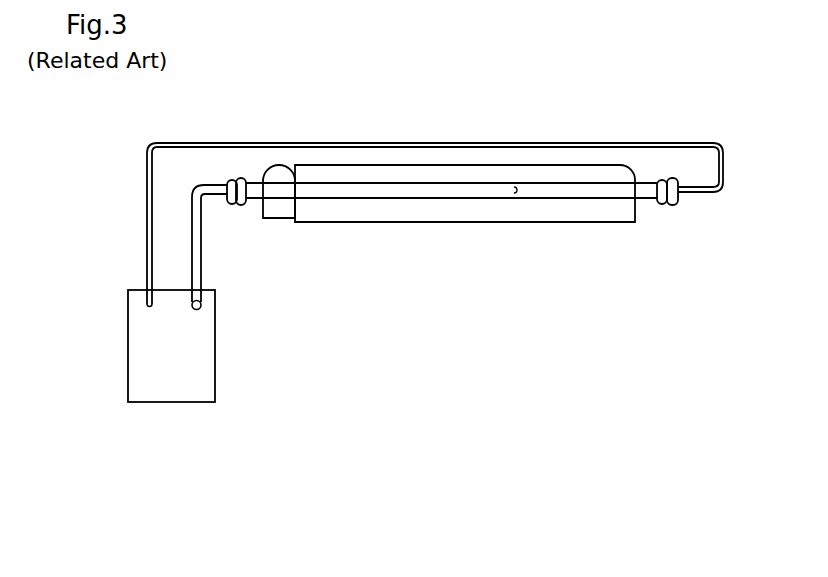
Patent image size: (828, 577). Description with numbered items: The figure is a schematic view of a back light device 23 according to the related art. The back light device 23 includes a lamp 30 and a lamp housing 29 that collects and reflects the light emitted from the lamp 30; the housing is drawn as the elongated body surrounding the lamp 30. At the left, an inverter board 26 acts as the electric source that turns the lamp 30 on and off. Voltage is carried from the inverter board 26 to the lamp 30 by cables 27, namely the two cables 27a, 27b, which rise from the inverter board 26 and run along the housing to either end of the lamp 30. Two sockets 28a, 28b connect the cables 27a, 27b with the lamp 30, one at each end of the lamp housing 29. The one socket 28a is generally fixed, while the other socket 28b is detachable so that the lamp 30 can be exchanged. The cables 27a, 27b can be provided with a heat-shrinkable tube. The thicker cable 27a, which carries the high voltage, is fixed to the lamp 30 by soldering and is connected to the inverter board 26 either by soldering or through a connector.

The back light device 23 is at (608, 103).
The inverter board 26 is at (168, 390).
The cables 27 is at (58, 205).
The cable for high voltage 27a is at (195, 242).
The cable 27b is at (147, 268).
The socket 28a is at (240, 206).
The socket 28b is at (677, 202).
The lamp housing 29 is at (513, 215).
The lamp 30 is at (650, 204).